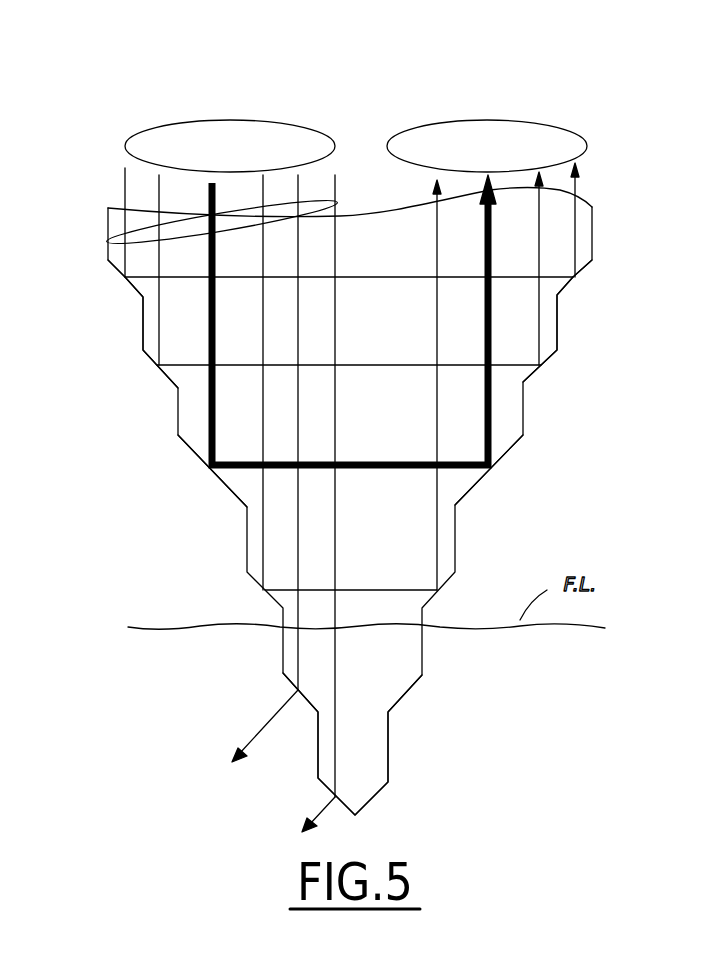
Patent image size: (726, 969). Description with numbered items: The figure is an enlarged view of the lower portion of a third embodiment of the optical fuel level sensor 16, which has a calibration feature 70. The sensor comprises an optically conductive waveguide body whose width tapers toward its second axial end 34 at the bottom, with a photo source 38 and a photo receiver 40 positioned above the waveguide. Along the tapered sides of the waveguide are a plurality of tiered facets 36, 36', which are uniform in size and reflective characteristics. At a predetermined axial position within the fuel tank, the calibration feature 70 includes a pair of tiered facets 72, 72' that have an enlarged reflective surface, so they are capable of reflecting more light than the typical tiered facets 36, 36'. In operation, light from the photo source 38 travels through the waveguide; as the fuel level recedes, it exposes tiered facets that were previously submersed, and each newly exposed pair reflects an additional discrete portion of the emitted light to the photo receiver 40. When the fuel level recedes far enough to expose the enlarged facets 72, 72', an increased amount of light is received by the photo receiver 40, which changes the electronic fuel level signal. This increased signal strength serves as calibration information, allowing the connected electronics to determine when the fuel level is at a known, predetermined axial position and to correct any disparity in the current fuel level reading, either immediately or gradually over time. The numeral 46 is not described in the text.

The optical fuel level sensor 16 is at (658, 116).
The photo source 38 is at (253, 120).
The photo receiver 40 is at (513, 120).
The axle / drive shaft 46 is at (138, 228).
The tiered facet 36 is at (129, 324).
The tiered facet 36' is at (576, 321).
The calibration feature 70 is at (167, 435).
The tiered facet 72 is at (274, 359).
The tiered facet 72' is at (437, 345).
The second axial end 34 is at (413, 792).